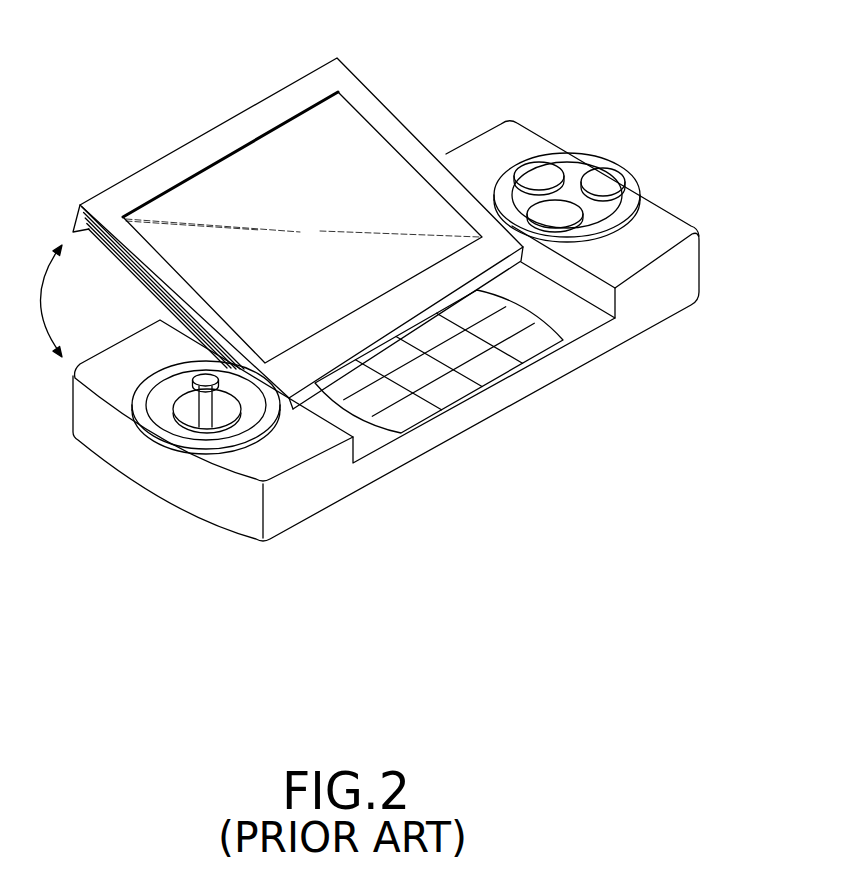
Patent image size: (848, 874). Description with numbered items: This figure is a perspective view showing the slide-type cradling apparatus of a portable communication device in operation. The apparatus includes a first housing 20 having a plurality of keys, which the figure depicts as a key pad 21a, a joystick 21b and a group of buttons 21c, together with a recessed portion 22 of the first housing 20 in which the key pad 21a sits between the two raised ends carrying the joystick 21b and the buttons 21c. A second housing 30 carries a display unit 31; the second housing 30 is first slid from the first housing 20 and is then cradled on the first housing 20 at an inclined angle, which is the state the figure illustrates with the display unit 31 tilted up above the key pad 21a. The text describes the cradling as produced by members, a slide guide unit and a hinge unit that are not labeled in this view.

The first housing 20 is at (204, 526).
The key pad 21a is at (450, 387).
The joystick 21b is at (207, 405).
The function buttons 21c is at (605, 188).
The keypad recess of main body 22 is at (570, 323).
The second housing 30 is at (200, 136).
The display unit 31 is at (285, 147).